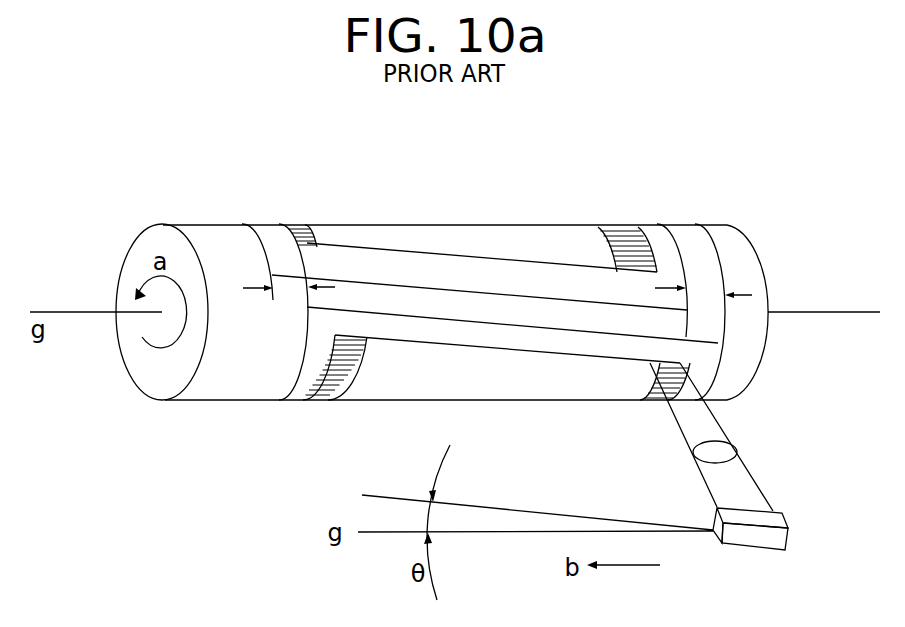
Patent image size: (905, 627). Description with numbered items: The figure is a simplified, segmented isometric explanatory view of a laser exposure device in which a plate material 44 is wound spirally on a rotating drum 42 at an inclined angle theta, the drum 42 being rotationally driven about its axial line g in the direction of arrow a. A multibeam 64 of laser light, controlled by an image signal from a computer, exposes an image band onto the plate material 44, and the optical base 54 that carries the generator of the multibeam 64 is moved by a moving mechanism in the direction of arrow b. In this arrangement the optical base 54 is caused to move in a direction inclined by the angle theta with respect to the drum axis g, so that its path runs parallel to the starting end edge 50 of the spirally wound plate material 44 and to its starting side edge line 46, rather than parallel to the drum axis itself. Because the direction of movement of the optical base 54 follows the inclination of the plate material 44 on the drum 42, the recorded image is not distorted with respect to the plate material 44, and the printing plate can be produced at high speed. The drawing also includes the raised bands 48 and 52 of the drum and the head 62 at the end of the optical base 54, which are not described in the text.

The drum 42 is at (727, 247).
The plate material 44 is at (503, 242).
The starting side edge line of the plate material 46 is at (692, 228).
The raised band 48 is at (243, 244).
The starting end edge 50 is at (515, 323).
The upper helical slot 52 is at (392, 282).
The optical base 54 is at (804, 514).
The head 62 is at (750, 542).
The multibeam 64 is at (736, 449).